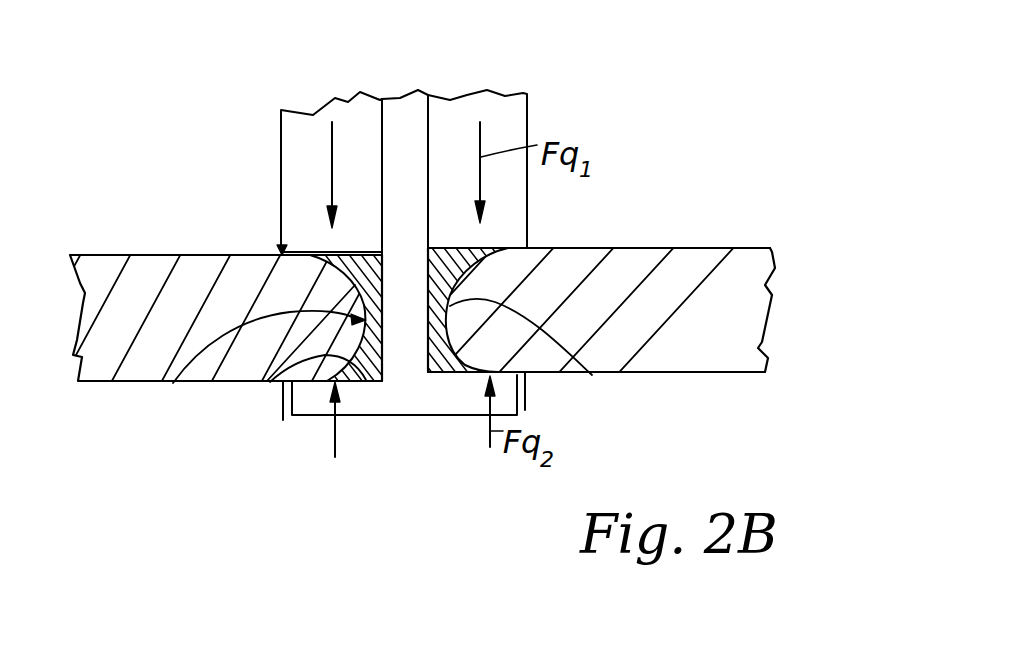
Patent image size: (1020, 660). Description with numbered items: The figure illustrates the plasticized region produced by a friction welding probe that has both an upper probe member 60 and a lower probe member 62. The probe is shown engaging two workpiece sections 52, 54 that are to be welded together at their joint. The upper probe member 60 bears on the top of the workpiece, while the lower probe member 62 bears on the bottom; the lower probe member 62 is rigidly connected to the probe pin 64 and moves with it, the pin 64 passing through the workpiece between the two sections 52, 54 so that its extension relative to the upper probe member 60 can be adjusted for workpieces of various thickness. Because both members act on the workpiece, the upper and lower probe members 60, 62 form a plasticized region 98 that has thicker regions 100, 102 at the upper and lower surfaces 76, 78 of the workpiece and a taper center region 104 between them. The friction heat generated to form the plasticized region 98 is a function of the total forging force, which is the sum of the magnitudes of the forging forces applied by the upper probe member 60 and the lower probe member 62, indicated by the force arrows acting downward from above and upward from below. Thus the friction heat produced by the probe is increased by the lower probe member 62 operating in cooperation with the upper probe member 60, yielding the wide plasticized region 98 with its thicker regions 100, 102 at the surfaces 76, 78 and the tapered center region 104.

The workpiece section 52 is at (118, 262).
The workpiece section 54 is at (712, 240).
The upper probe member 60 is at (473, 108).
The lower probe member 62 is at (380, 390).
The probe pin 64 is at (405, 127).
The upper surface 76 is at (757, 247).
The lower surface 78 is at (717, 370).
The plasticized region 98 is at (173, 383).
The thicker region 100 is at (310, 255).
The thicker region 102 is at (270, 382).
The taper center region 104 is at (592, 375).